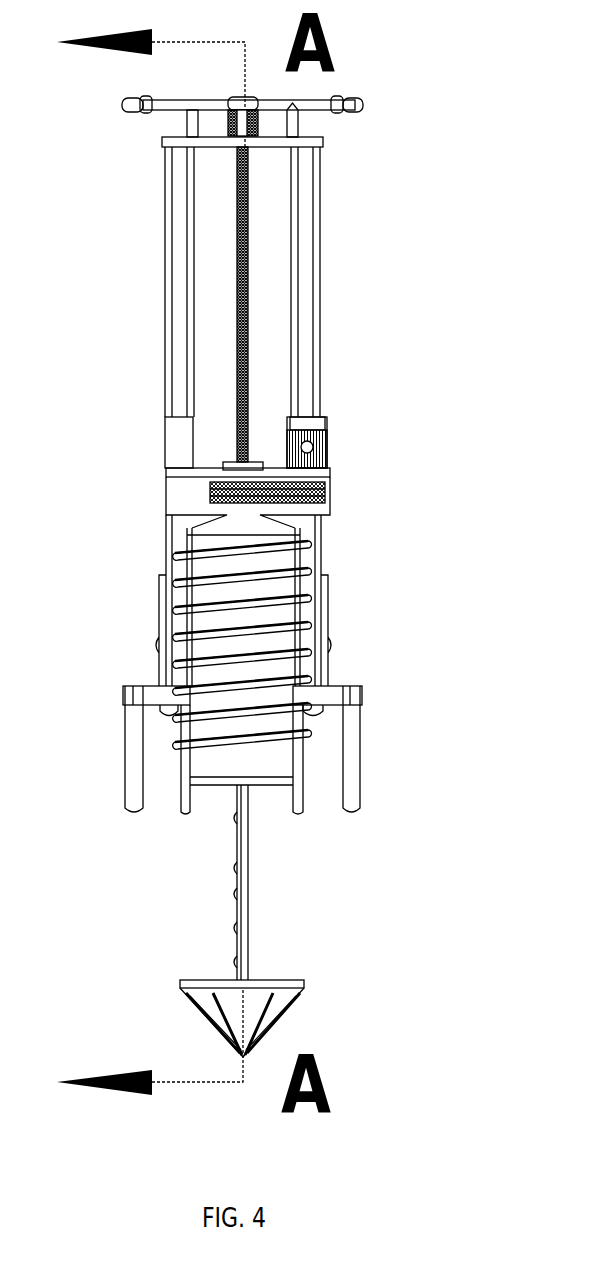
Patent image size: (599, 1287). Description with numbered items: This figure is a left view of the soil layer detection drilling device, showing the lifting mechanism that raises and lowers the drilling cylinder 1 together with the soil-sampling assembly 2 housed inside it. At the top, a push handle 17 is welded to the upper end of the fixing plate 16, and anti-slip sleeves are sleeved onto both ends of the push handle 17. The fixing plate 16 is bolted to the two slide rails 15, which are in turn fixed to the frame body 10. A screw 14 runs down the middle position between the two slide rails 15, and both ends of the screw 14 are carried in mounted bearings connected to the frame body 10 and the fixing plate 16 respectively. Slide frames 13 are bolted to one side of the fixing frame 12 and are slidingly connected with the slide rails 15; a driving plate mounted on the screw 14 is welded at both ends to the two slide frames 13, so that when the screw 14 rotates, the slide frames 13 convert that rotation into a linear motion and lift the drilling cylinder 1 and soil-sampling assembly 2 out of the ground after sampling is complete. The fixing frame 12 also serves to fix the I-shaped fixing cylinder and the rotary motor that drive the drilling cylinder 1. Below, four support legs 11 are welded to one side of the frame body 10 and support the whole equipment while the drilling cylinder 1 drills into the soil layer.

The drilling cylinder 1 is at (285, 703).
The soil-sampling assembly 2 is at (303, 986).
The frame body 10 is at (147, 695).
The support leg 11 is at (360, 750).
The fixing frame 12 is at (176, 493).
The slide frame 13 is at (176, 433).
The screw 14 is at (235, 352).
The slide rail 15 is at (175, 303).
The fixing plate 16 is at (192, 143).
The push handle 17 is at (140, 110).